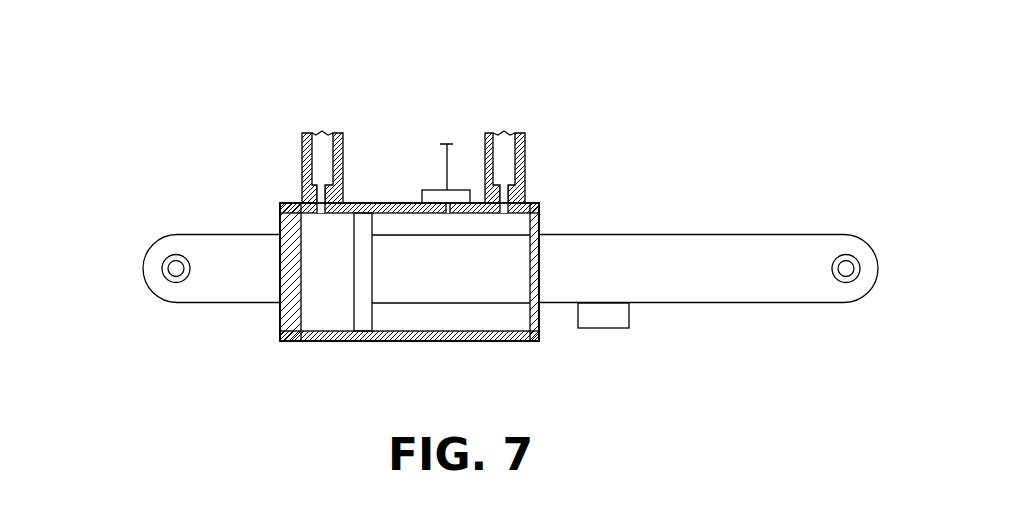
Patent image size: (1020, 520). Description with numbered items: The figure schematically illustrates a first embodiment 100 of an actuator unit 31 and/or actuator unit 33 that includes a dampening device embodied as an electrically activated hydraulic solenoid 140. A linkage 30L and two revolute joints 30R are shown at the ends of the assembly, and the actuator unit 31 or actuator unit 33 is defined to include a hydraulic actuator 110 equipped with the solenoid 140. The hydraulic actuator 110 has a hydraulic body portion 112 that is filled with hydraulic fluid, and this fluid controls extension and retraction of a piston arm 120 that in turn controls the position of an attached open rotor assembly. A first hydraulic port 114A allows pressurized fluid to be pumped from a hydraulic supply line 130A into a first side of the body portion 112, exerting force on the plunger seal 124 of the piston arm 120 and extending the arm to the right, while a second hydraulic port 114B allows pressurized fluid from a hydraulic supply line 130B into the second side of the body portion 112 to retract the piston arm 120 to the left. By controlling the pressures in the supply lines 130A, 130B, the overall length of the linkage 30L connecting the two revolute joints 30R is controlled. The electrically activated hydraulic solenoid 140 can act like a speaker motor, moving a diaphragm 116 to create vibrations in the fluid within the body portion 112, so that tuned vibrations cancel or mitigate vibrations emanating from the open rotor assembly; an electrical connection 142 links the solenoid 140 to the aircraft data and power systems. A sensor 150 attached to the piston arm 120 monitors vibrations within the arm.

The first embodiment 100 is at (110, 79).
The hydraulic actuator 110 is at (389, 273).
The hydraulic body portion 112 is at (281, 321).
The first hydraulic port 114A is at (303, 197).
The second hydraulic port 114B is at (522, 190).
The diaphragm 116 is at (447, 207).
The piston arm 120 is at (662, 234).
The plunger seal 124 is at (352, 315).
The hydraulic supply line 130A is at (302, 138).
The hydraulic supply line 130B is at (525, 153).
The electrically activated hydraulic solenoid 140 is at (438, 189).
The electrical connection 142 is at (452, 158).
The sensor 150 is at (607, 328).
The linkage 30L is at (220, 302).
The revolute joints 30R is at (172, 282).
The actuator unit 31 is at (553, 353).
The actuator unit 33 is at (553, 353).